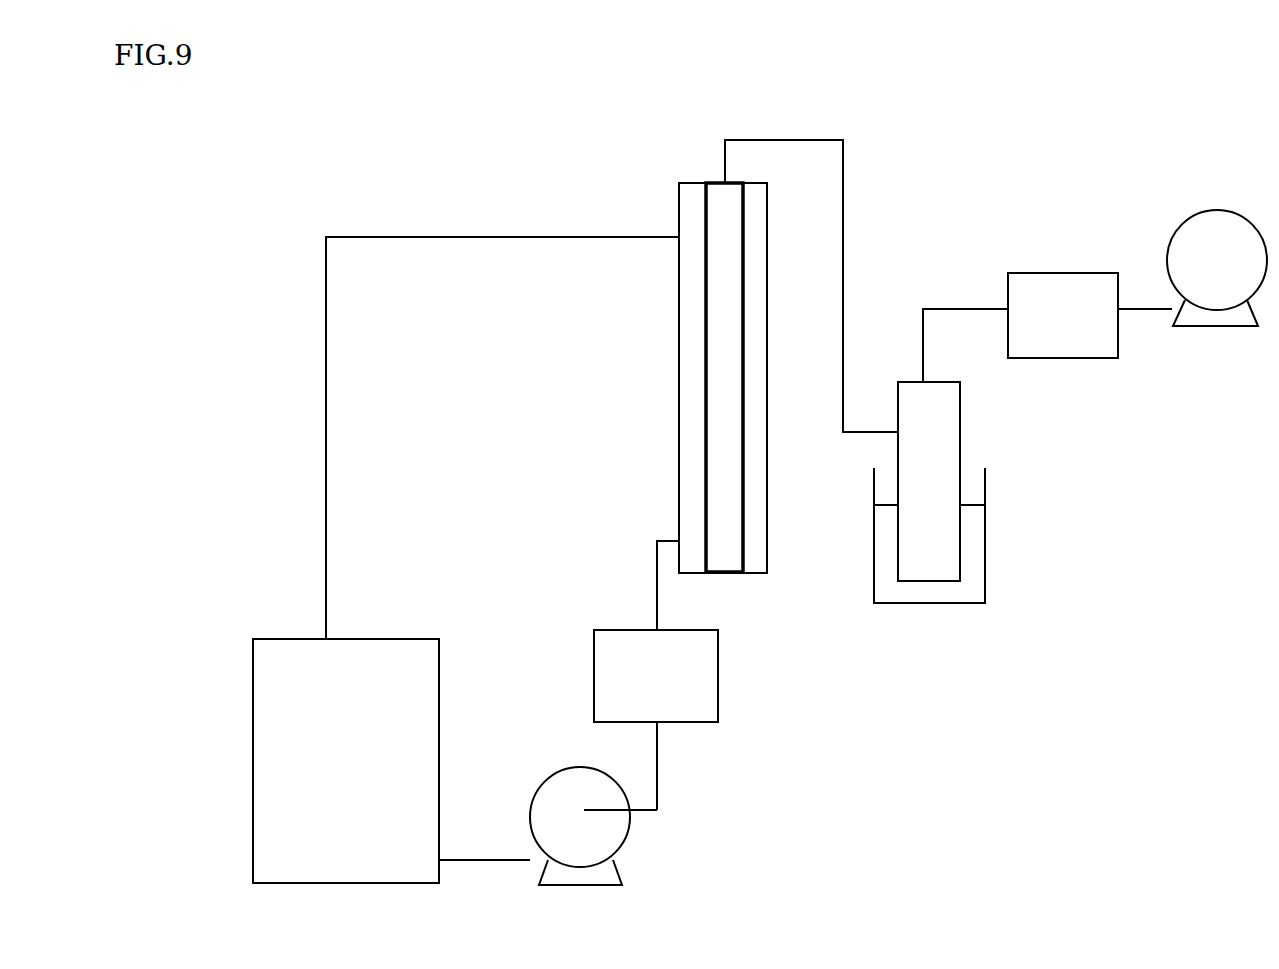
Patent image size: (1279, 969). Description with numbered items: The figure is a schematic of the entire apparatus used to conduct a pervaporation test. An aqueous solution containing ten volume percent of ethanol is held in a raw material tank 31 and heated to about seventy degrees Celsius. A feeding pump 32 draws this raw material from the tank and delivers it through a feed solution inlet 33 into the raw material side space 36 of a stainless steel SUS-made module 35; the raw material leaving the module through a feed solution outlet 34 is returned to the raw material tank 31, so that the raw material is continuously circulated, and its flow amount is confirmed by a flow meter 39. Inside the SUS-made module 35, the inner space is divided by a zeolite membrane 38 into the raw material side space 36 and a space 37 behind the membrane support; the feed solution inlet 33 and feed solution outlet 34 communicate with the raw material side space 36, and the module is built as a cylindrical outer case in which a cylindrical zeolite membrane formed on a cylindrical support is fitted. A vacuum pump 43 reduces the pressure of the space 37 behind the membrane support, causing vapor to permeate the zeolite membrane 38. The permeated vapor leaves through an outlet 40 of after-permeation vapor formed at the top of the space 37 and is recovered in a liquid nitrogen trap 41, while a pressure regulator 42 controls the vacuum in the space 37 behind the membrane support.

The raw material tank 31 is at (400, 658).
The feeding pump 32 is at (600, 824).
The feed solution inlet 33 is at (678, 540).
The feed solution outlet 34 is at (676, 235).
The SUS-made module 35 is at (777, 575).
The raw material side space 36 is at (690, 311).
The space behind membrane support 37 is at (722, 275).
The zeolite membrane 38 is at (704, 406).
The flow meter 39 is at (692, 698).
The outlet of vapor after permeation 40 is at (728, 181).
The liquid N2 trap 41 is at (962, 551).
The pressure regulator 42 is at (1045, 333).
The vacuum pump 43 is at (1200, 253).